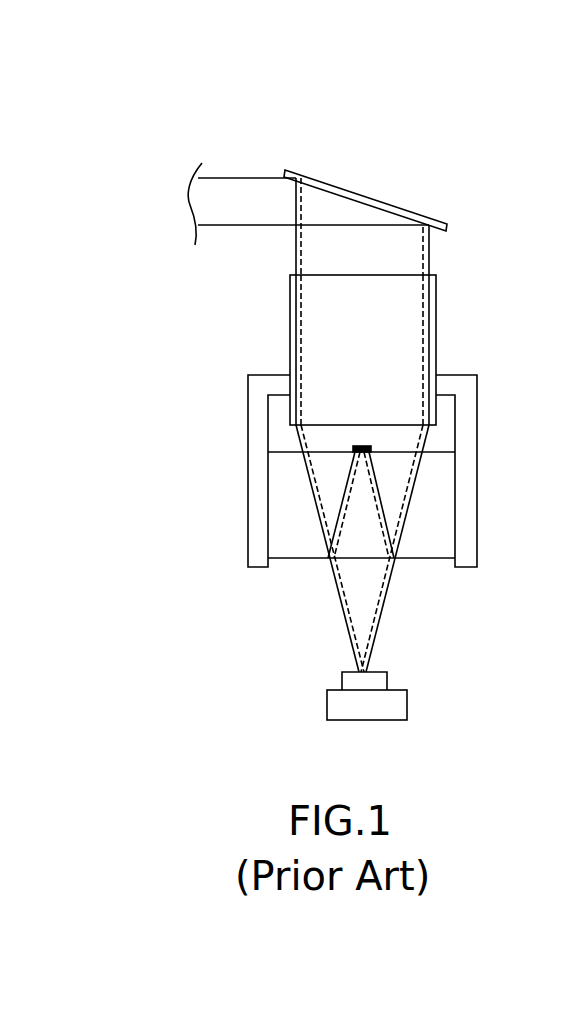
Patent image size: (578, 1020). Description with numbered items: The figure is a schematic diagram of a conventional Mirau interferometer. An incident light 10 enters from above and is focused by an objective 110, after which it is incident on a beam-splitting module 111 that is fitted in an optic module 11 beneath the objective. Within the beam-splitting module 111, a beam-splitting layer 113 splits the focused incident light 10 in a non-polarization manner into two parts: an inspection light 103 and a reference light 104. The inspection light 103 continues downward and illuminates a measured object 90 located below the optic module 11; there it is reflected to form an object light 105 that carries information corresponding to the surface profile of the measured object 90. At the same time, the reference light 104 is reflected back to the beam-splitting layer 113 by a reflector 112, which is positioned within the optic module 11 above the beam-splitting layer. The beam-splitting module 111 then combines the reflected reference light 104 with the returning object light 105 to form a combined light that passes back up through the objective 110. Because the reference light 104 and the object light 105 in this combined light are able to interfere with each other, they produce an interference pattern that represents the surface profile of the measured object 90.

The incident light 10 is at (267, 177).
The optic module 11 is at (152, 382).
The objective 110 is at (290, 328).
The beam-splitting module 111 is at (278, 476).
The reflector 112 is at (365, 446).
The beam-splitting layer 113 is at (310, 560).
The inspection light 103 is at (340, 607).
The reference light 104 is at (345, 504).
The object light 105 is at (343, 600).
The measured object 90 is at (397, 710).